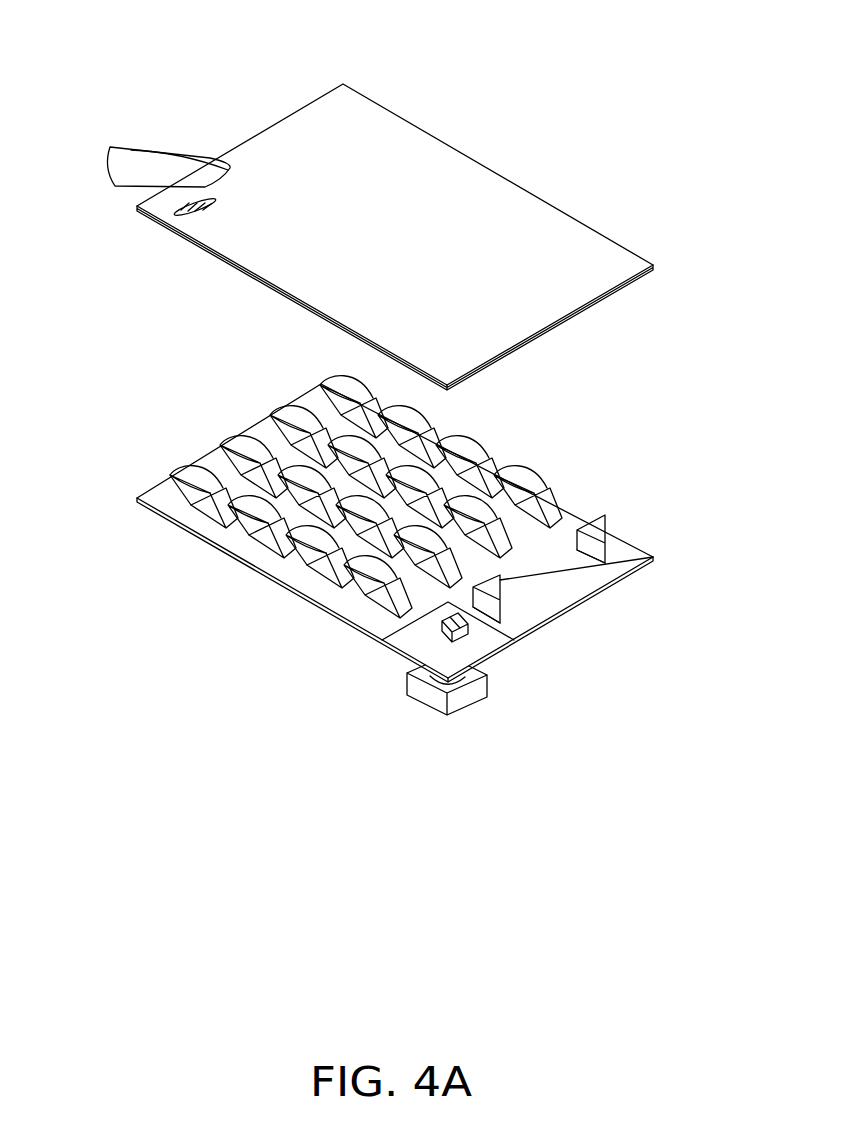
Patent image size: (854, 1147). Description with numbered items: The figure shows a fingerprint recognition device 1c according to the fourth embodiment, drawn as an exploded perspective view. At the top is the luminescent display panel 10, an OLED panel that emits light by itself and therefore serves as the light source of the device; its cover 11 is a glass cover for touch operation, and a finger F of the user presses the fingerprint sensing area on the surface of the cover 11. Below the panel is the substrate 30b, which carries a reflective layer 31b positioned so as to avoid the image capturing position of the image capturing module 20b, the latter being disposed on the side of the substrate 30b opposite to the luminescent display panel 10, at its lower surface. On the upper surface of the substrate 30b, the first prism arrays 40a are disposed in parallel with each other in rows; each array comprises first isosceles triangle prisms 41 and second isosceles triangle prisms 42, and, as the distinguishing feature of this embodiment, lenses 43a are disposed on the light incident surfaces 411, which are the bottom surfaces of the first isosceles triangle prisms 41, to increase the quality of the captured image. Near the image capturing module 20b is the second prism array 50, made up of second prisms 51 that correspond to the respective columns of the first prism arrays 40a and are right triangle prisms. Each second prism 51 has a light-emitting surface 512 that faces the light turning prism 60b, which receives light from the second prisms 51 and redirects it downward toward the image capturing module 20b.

The fingerprint recognition device 1c is at (226, 44).
The finger F is at (128, 146).
The luminescent display panel 10 is at (570, 318).
The cover 11 is at (432, 152).
The reflective layer 31b is at (332, 615).
The light turning prism 60b is at (436, 628).
The image capturing module 20b is at (468, 692).
The substrate 30b is at (563, 606).
The second prism array 50 is at (616, 524).
The second prism 51 is at (578, 530).
The light-emitting surface 512 is at (590, 552).
The first prism array 40a is at (311, 374).
The lens 43a is at (180, 467).
The light incident surface 411 is at (171, 477).
The first isosceles triangle prism 41 is at (172, 492).
The second isosceles triangle prism 42 is at (214, 502).